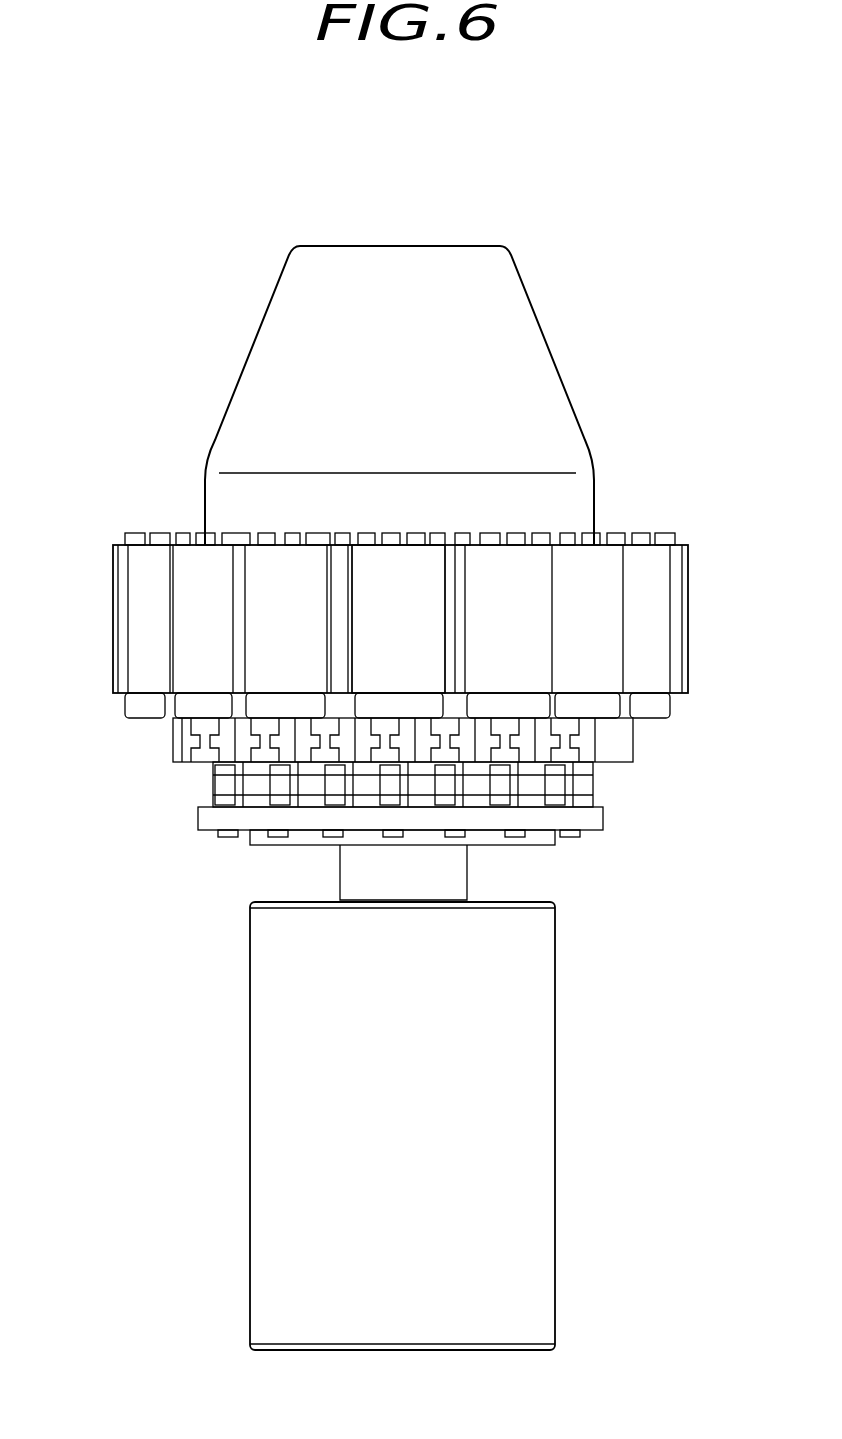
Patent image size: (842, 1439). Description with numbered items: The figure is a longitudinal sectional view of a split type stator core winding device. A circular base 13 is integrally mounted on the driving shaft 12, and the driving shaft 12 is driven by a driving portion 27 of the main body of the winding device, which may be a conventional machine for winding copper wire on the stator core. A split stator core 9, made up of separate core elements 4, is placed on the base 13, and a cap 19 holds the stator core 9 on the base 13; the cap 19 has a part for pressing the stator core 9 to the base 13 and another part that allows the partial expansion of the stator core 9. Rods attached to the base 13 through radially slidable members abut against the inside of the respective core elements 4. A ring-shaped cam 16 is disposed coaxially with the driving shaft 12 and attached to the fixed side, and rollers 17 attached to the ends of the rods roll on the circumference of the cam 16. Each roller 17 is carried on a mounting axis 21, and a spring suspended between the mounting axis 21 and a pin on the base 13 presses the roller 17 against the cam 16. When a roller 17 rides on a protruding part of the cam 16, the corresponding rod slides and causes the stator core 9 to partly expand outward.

The cap 19 is at (556, 372).
The core element 4 is at (432, 578).
The split stator core 9 is at (688, 613).
The circular base 13 is at (180, 743).
The mounting axis 21 is at (583, 792).
The roller 17 is at (207, 818).
The ring-shaped cam 16 is at (538, 838).
The driving shaft 12 is at (356, 870).
The driving portion 27 is at (556, 1095).